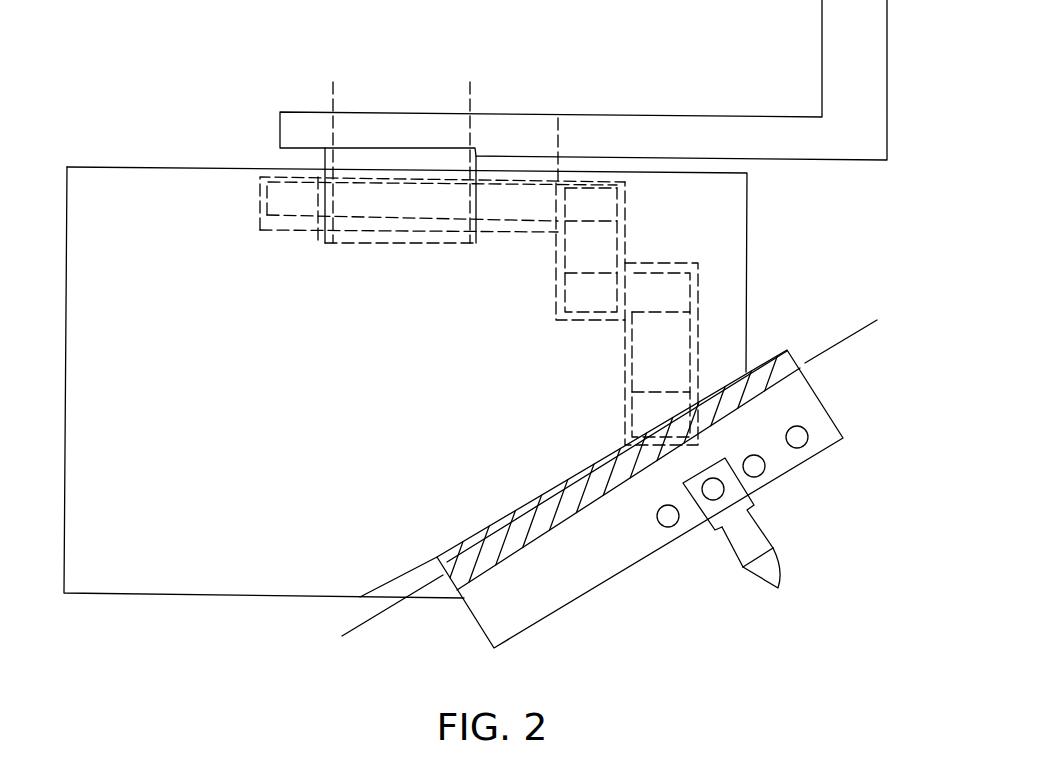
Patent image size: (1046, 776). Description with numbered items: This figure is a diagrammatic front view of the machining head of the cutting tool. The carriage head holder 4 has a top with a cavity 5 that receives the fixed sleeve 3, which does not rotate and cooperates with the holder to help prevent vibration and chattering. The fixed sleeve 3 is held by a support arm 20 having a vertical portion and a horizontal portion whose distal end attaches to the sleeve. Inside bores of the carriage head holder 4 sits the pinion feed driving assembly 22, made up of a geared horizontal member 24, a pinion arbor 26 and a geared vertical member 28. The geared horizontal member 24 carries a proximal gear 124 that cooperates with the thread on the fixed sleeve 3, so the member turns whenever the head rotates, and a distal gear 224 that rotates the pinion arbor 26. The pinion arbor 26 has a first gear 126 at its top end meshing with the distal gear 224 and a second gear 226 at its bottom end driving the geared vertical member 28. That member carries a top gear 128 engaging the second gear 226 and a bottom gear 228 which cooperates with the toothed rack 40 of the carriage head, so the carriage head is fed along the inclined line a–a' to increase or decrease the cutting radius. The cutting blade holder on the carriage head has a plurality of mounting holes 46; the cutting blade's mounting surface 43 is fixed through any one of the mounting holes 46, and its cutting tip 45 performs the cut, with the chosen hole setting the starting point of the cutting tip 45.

The support arm 20 is at (822, 7).
The carriage head holder 4 is at (110, 175).
The fixed sleeve 3 is at (327, 157).
The cavity 5 is at (318, 170).
The proximal gear 124 is at (398, 193).
The distal gear 224 is at (557, 200).
The pinion feed driving assembly 22 is at (468, 267).
The geared horizontal member 24 is at (512, 212).
The pinion arbor 26 is at (580, 248).
The geared vertical member 28 is at (642, 345).
The first gear 126 is at (610, 202).
The second gear 226 is at (592, 290).
The top gear 128 is at (678, 293).
The bottom gear 228 is at (663, 400).
The toothed rack 40 is at (780, 382).
The mounting holes 46 is at (765, 467).
The mounting surface 43 is at (750, 528).
The cutting tip 45 is at (773, 573).
The line a–a' a is at (379, 614).
The line a– a' is at (850, 331).